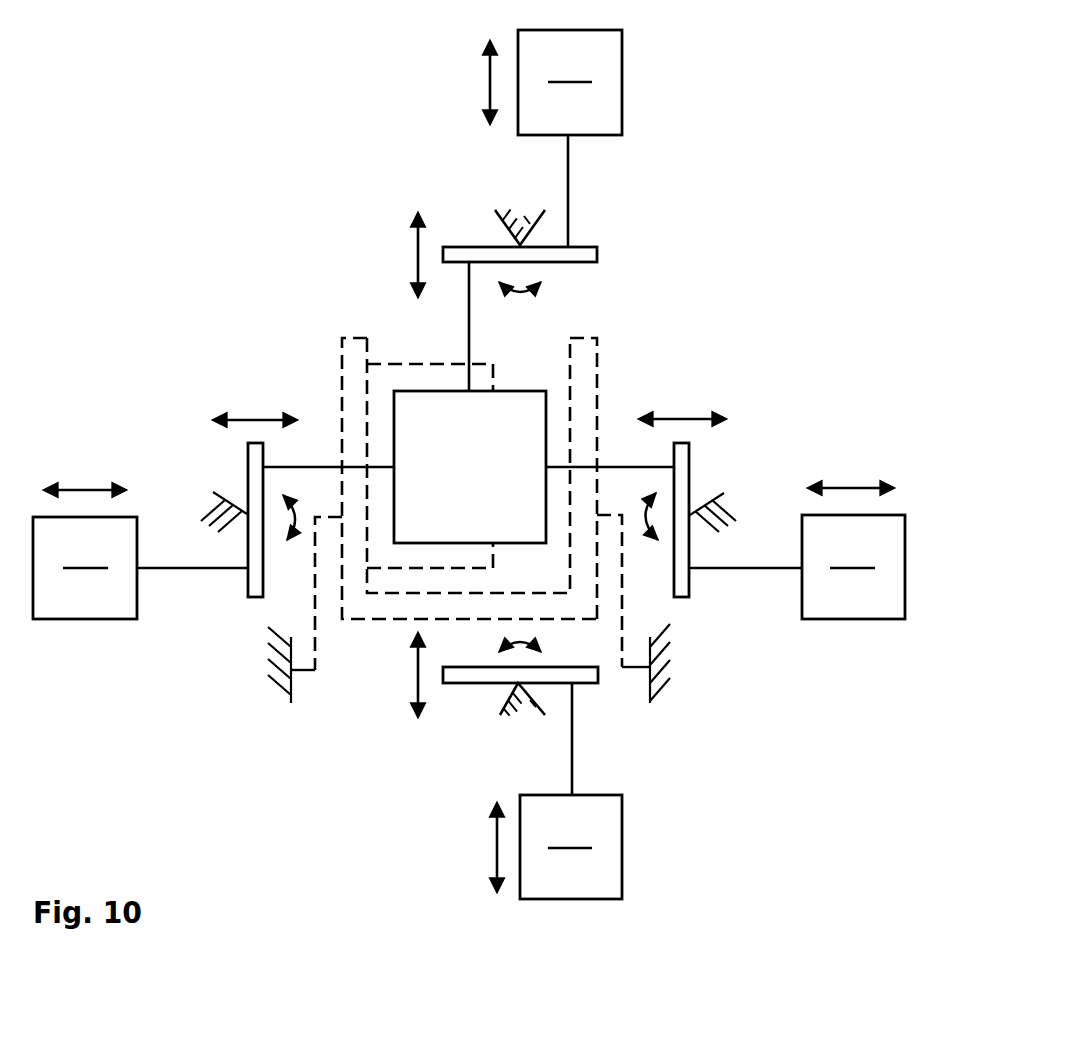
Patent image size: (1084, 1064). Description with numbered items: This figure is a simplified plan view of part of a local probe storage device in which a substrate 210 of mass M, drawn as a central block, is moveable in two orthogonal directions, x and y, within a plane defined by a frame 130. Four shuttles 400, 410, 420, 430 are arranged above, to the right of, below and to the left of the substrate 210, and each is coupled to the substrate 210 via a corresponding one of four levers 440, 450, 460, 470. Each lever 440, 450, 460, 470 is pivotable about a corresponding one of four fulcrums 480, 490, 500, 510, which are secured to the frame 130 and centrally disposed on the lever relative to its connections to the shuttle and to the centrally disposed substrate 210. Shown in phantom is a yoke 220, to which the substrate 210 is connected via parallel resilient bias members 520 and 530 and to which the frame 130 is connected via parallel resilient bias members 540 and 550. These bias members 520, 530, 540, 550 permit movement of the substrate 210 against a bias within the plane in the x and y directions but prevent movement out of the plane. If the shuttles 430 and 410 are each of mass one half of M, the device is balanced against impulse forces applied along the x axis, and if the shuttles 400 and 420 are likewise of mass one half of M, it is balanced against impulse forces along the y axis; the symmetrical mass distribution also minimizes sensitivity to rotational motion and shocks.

The frame 130 is at (285, 680).
The substrate 210 is at (505, 391).
The yoke 220 is at (597, 348).
The shuttle 400 is at (622, 92).
The shuttle 410 is at (867, 620).
The shuttle 420 is at (622, 863).
The shuttle 430 is at (52, 620).
The lever 440 is at (597, 242).
The lever 450 is at (678, 597).
The lever 460 is at (582, 683).
The lever 470 is at (248, 587).
The fulcrum 480 is at (495, 210).
The fulcrum 490 is at (722, 493).
The fulcrum 500 is at (500, 715).
The fulcrum 510 is at (215, 493).
The resilient bias member 520 is at (408, 568).
The resilient bias member 530 is at (428, 362).
The resilient bias member 540 is at (623, 668).
The resilient bias member 550 is at (315, 560).